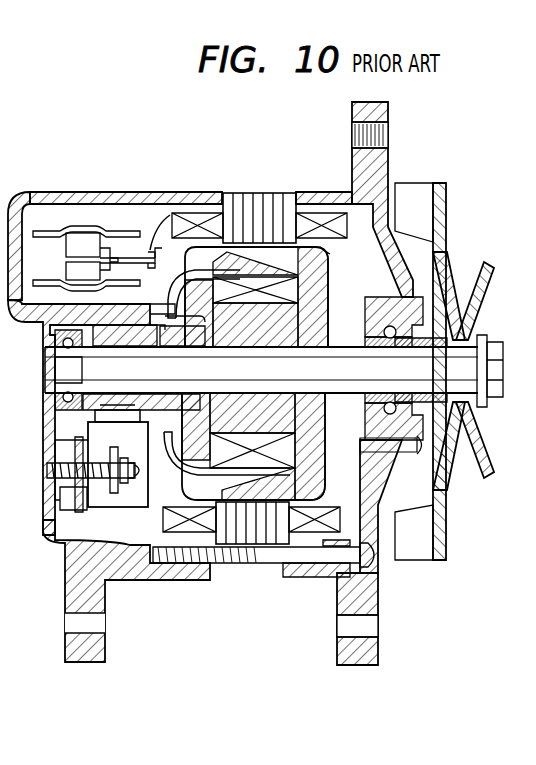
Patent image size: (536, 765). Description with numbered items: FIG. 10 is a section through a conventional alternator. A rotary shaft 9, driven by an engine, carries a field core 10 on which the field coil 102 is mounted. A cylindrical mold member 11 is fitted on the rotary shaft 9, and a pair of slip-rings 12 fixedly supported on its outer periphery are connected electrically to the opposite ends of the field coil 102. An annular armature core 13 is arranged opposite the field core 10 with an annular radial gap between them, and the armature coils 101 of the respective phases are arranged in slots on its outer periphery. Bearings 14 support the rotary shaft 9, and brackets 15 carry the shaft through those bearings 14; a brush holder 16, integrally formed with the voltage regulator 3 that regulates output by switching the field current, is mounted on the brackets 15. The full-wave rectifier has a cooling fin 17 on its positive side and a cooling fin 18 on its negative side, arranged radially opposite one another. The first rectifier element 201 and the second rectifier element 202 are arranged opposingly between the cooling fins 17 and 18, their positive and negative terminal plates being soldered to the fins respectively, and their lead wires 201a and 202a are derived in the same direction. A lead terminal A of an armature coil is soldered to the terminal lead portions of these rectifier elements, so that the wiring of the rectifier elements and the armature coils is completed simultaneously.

The voltage regulator 3 is at (60, 498).
The rotary shaft 9 is at (497, 383).
The field core 10 is at (320, 306).
The cylindrical mold member 11 is at (164, 397).
The slip-rings 12 is at (158, 320).
The annular armature core 13 is at (260, 193).
The bearings 14 is at (56, 346).
The brackets 15 is at (66, 562).
The brush holder 16 is at (136, 507).
The cooling fin 17 is at (40, 231).
The cooling fin 18 is at (40, 284).
The armature coils 101 is at (197, 213).
The field coil 102 is at (328, 255).
The first rectifier element 201 is at (85, 233).
The lead wire 201a is at (165, 345).
The second rectifier element 202 is at (68, 272).
The lead wire 202a is at (163, 330).
The lead terminal A is at (158, 240).